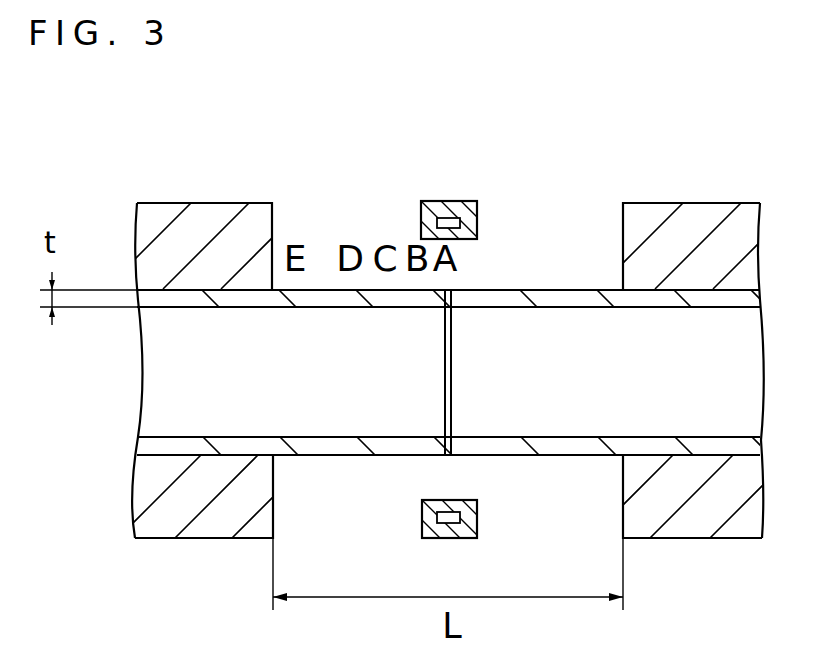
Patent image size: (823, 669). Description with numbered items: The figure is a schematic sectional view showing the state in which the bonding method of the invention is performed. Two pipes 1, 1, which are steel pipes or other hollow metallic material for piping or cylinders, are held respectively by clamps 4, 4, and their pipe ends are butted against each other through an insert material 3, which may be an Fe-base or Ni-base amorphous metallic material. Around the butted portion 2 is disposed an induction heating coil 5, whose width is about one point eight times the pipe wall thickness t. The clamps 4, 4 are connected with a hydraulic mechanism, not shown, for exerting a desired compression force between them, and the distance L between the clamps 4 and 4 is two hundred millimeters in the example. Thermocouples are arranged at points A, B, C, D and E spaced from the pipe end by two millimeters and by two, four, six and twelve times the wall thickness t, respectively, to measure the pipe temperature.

The pipe 1 is at (318, 457).
The butted portion 2 is at (474, 286).
The insert material 3 is at (450, 457).
The clamp 4 is at (180, 538).
The induction heating coil 5 is at (477, 212).